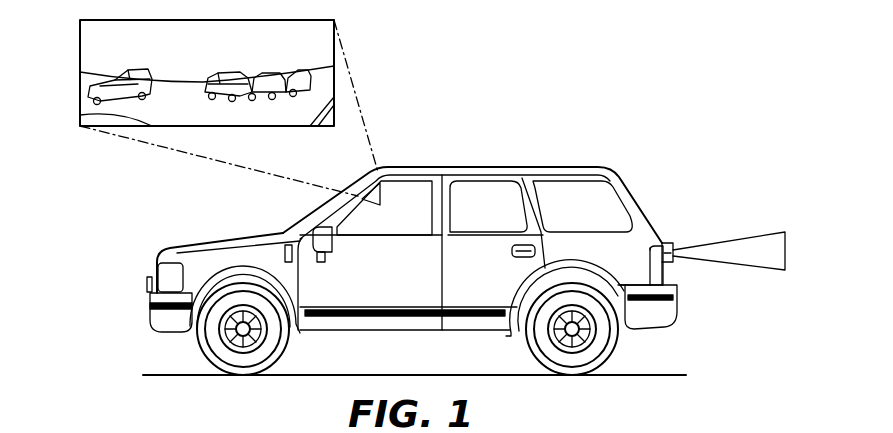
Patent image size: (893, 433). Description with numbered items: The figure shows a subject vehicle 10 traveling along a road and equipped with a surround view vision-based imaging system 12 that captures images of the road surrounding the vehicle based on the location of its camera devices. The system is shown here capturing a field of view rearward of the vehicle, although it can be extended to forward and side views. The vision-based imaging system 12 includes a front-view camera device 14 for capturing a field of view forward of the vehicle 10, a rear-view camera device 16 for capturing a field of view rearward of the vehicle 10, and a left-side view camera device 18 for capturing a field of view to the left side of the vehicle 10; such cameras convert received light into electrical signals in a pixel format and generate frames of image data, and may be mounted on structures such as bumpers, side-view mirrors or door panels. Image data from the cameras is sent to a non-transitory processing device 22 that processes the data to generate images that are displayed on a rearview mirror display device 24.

The subject vehicle 10 is at (530, 168).
The surround view vision-based imaging system 12 is at (728, 209).
The front-view camera device 14 is at (147, 280).
The rear-view camera device 16 is at (666, 243).
The left-side view camera device 18 is at (322, 262).
The non-transitory processing device 22 is at (286, 247).
The rearview mirror display device 24 is at (80, 62).